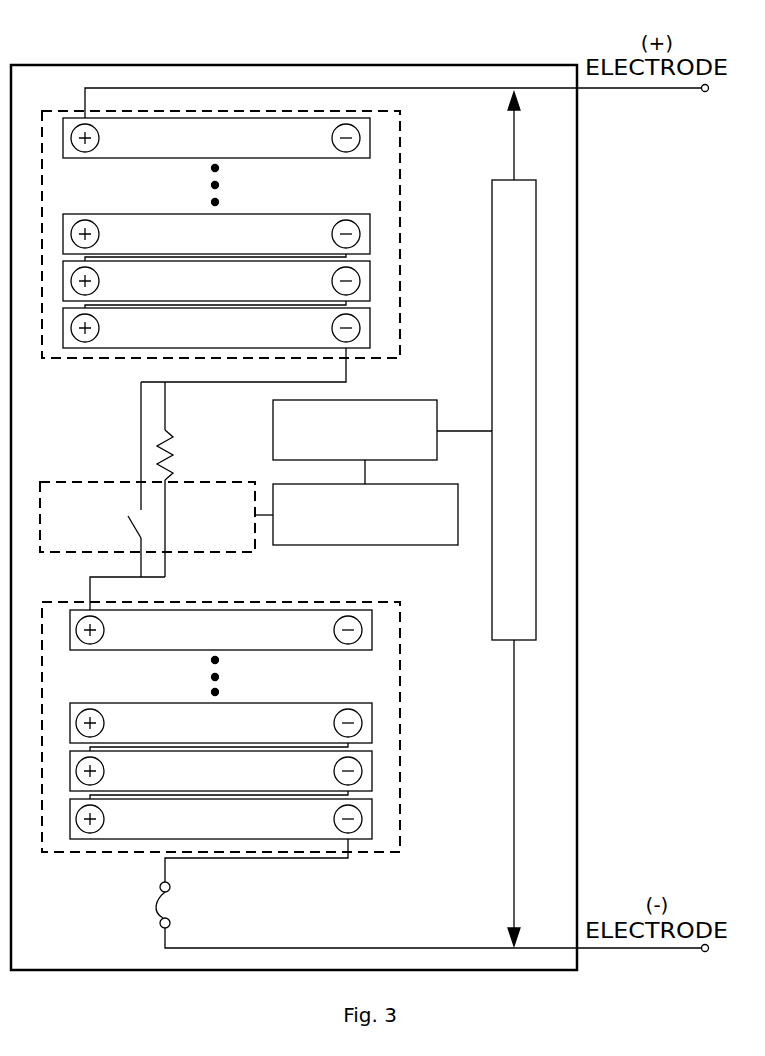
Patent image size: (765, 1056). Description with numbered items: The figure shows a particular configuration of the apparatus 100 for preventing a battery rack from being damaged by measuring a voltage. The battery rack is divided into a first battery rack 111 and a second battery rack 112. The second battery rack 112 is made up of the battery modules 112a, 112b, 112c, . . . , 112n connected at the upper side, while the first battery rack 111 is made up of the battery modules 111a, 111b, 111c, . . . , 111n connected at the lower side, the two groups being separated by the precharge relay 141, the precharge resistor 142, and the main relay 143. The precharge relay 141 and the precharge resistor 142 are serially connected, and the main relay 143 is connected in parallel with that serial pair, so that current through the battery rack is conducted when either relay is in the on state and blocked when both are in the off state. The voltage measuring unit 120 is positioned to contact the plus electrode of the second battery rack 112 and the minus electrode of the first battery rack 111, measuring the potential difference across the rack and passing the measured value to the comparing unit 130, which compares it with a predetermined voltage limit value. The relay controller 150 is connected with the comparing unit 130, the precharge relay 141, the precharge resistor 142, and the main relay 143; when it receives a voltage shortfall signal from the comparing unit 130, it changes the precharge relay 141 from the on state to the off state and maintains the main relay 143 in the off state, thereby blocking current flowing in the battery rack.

The apparatus for preventing a battery rack from being damaged by measuring a voltag 100 is at (367, 38).
The first battery rack 111 is at (400, 727).
The battery module 111a is at (372, 819).
The battery module 111b is at (372, 771).
The battery module 111c is at (372, 723).
The battery module 111n is at (372, 630).
The second battery rack 112 is at (400, 237).
The battery module 112a is at (370, 328).
The battery module 112b is at (370, 281).
The battery module 112c is at (370, 234).
The battery module 112n is at (370, 138).
The voltage measuring unit 120 is at (520, 180).
The comparing unit 130 is at (400, 400).
The precharge relay 141 is at (165, 522).
The precharge resistor 142 is at (165, 432).
The main relay 143 is at (128, 516).
The relay controller 150 is at (405, 545).